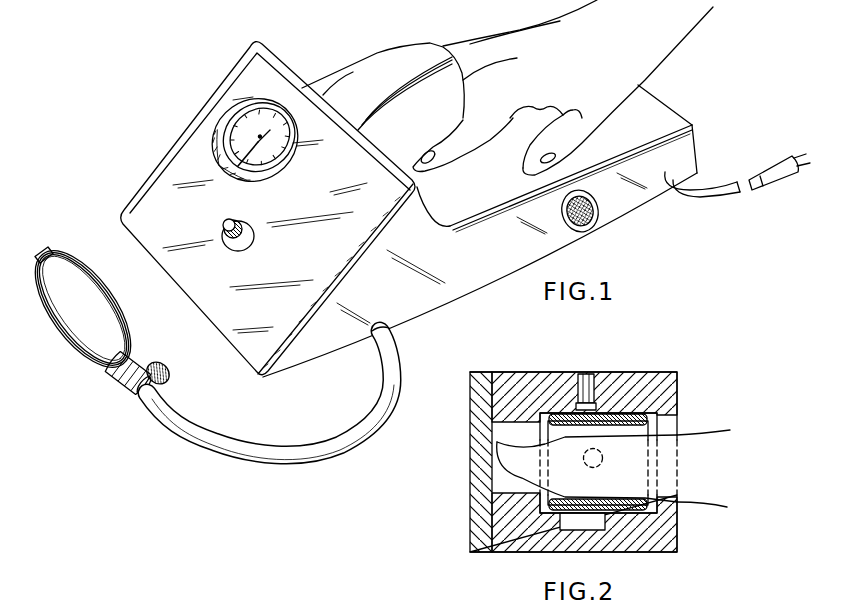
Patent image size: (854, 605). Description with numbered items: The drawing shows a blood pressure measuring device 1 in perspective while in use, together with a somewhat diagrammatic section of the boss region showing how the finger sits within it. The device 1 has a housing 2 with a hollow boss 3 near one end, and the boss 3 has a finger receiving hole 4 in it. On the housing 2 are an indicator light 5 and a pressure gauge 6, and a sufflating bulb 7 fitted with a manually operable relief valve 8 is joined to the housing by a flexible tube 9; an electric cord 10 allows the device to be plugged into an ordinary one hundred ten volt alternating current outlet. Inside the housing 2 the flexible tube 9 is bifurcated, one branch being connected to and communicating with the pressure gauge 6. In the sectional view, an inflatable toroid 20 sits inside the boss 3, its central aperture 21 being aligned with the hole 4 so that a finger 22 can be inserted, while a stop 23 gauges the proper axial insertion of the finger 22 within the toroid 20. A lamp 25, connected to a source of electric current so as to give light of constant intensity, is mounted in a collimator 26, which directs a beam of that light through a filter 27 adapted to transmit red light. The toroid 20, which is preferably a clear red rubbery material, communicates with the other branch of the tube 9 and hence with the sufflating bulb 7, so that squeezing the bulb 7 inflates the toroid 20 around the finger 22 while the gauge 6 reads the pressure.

In FIG. 1, the blood pressure measuring device 1 is at (333, 67).
In FIG. 1, the housing 2 is at (162, 162).
In FIG. 1, the hollow boss 3 is at (410, 55).
In FIG. 2, the finger receiving hole 4 is at (668, 430).
In FIG. 1, the indicator light 5 is at (237, 222).
In FIG. 1, the pressure gauge 6 is at (245, 125).
In FIG. 1, the sufflating bulb 7 is at (82, 355).
In FIG. 1, the manually operable relief valve 8 is at (163, 362).
In FIG. 1, the flexible tube 9 is at (292, 463).
In FIG. 2, the flexible tube 9 is at (603, 456).
In FIG. 1, the electric cord 10 is at (712, 196).
In FIG. 2, the inflatable toroid 20 is at (570, 412).
In FIG. 2, the central aperture 21 is at (560, 431).
In FIG. 2, the finger 22 is at (522, 472).
In FIG. 2, the stop 23 is at (470, 466).
In FIG. 2, the lamp 25 is at (588, 410).
In FIG. 2, the collimator 26 is at (600, 412).
In FIG. 2, the filter 27 is at (615, 420).